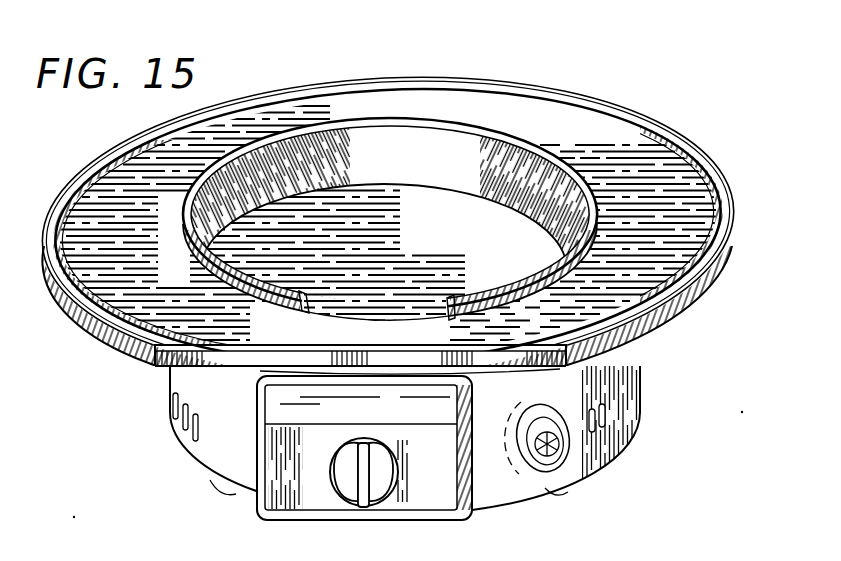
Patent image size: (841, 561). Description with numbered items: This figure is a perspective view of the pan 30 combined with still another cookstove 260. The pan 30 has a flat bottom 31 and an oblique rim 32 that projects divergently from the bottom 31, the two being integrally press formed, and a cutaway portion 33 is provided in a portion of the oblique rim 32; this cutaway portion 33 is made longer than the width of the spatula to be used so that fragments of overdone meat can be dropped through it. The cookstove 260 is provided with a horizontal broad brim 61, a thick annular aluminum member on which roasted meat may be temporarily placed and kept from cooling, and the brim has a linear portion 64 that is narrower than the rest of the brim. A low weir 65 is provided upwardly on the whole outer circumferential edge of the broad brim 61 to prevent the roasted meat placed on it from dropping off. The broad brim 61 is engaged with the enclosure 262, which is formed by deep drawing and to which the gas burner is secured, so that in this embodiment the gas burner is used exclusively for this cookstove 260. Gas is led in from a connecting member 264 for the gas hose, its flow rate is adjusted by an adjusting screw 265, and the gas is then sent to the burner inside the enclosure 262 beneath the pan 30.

The cookstove 260 is at (671, 104).
The broad brim 61 is at (688, 189).
The low weir 65 is at (711, 262).
The linear portion 64 is at (217, 358).
The pan 30 is at (496, 166).
The flat bottom 31 is at (386, 226).
The oblique rim 32 is at (250, 176).
The cutaway portion 33 is at (327, 312).
The enclosure 262 is at (622, 375).
The adjusting screw 265 is at (373, 481).
The connecting member 264 is at (560, 443).